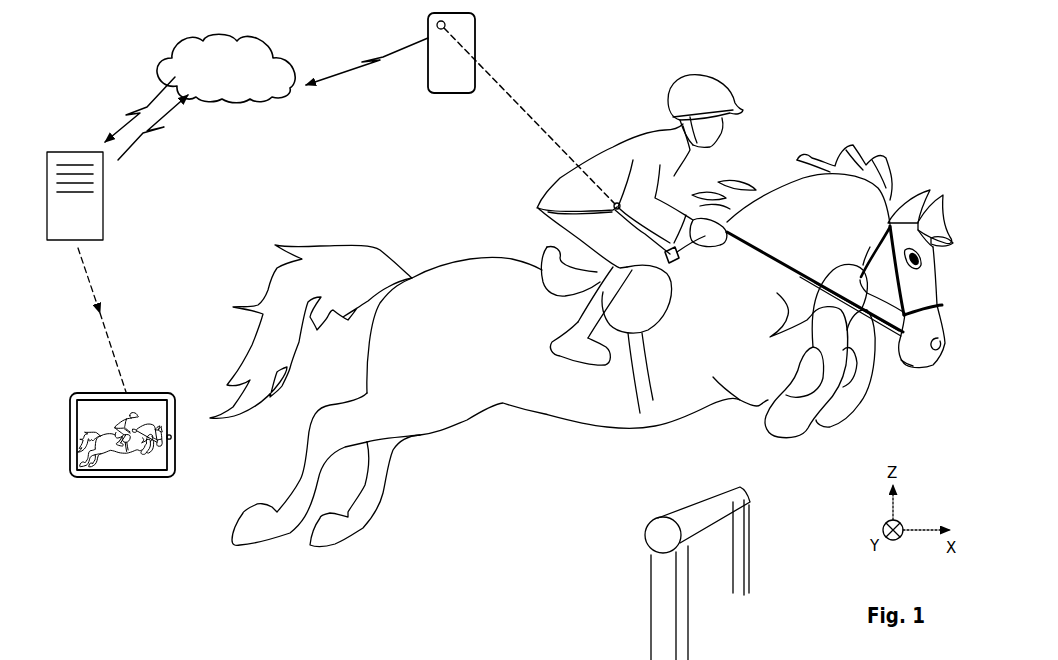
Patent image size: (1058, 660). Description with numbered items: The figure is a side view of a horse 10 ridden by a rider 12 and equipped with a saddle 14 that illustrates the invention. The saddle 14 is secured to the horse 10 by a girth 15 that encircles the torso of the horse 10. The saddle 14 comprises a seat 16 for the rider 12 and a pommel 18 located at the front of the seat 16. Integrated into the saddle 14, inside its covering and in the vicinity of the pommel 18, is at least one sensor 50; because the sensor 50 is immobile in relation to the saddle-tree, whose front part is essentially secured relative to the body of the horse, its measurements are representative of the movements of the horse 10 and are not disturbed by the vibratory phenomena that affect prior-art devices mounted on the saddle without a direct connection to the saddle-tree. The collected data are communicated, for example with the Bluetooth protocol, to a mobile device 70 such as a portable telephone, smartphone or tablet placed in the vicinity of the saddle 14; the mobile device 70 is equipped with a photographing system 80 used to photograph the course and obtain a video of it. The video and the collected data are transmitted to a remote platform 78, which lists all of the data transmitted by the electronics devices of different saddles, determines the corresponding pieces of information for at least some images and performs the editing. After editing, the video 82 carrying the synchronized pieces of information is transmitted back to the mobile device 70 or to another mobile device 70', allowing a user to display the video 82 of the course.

The horse 10 is at (453, 260).
The rider 12 is at (609, 164).
The saddle 14 is at (537, 257).
The girth 15 is at (660, 407).
The seat 16 is at (576, 256).
The pommel 18 is at (673, 258).
The sensor 50 is at (676, 262).
The mobile device 70 is at (414, 59).
The another mobile device 70' is at (122, 467).
The remote platform 78 is at (69, 148).
The photographing system 80 is at (437, 25).
The video 82 is at (90, 407).